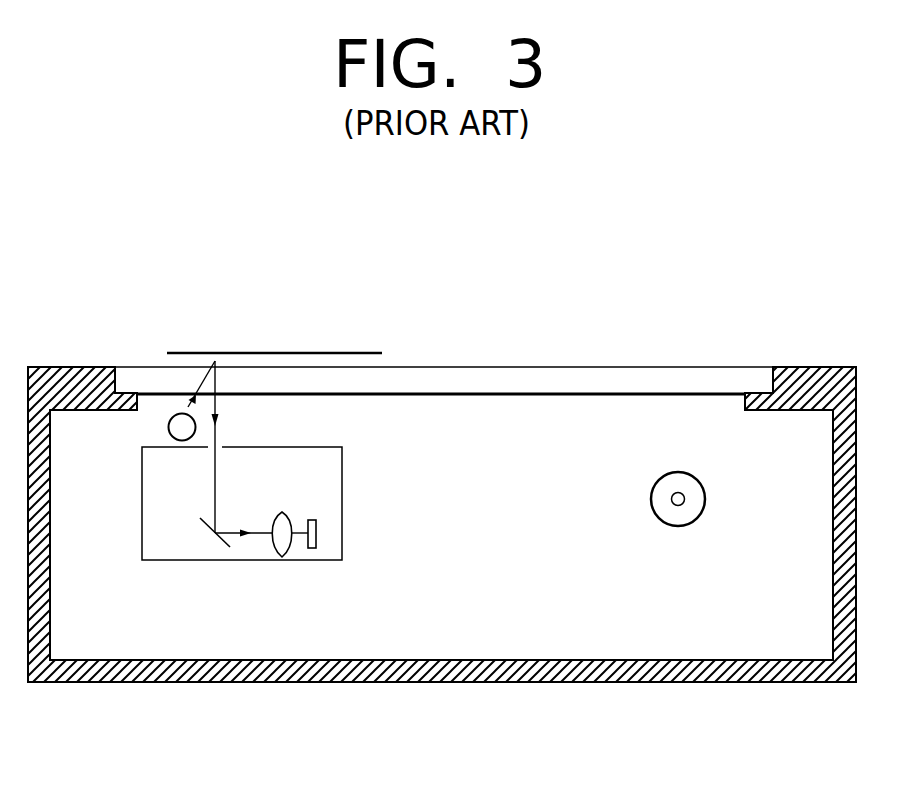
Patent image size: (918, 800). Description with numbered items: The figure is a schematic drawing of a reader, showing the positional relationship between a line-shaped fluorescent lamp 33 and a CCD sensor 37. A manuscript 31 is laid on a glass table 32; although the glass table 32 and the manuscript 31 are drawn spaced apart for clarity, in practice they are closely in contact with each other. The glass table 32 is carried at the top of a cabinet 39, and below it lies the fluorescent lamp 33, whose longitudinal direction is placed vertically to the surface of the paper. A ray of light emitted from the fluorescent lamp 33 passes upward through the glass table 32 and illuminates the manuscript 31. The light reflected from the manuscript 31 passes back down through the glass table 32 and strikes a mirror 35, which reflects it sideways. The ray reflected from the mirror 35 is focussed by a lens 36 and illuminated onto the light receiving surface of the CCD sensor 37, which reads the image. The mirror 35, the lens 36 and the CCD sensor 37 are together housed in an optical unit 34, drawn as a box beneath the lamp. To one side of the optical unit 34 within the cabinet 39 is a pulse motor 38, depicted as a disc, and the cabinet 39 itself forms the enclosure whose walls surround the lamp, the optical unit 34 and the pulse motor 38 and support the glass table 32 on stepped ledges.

The manuscript 31 is at (222, 353).
The glass table 32 is at (493, 377).
The fluorescent lamp 33 is at (169, 428).
The optical unit 34 is at (307, 447).
The mirror 35 is at (213, 542).
The lens 36 is at (280, 555).
The CCD sensor 37 is at (317, 525).
The pulse motor 38 is at (662, 525).
The cabinet 39 is at (830, 378).